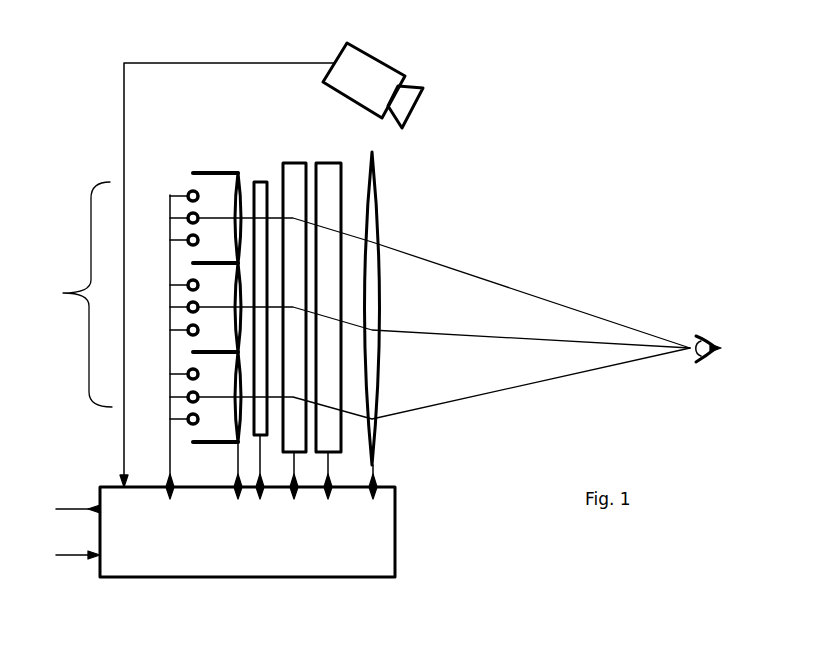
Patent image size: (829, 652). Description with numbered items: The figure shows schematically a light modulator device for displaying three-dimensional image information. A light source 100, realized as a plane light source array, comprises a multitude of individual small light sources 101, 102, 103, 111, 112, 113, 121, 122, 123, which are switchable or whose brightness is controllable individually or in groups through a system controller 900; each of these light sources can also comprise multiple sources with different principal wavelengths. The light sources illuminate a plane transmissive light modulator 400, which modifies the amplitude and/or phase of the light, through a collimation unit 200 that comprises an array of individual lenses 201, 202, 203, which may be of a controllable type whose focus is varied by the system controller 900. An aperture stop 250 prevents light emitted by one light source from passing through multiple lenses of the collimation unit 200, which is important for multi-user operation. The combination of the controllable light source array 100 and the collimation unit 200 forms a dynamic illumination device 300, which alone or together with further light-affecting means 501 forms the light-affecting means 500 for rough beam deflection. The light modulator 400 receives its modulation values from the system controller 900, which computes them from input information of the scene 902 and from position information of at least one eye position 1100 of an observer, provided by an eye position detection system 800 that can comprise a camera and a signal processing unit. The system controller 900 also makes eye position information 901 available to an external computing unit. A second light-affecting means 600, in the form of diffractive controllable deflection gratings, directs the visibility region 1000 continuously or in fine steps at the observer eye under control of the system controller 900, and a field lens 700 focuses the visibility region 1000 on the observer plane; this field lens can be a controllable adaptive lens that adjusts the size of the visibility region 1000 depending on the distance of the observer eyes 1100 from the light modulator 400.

The light source 100 is at (71, 294).
The individual small light source 101 is at (187, 195).
The individual small light source 102 is at (187, 217).
The individual small light source 103 is at (187, 239).
The individual small light source 111 is at (187, 284).
The individual small light source 112 is at (187, 306).
The individual small light source 113 is at (187, 329).
The individual small light source 121 is at (187, 373).
The individual small light source 122 is at (187, 396).
The individual small light source 123 is at (187, 418).
The collimation unit 200 is at (223, 284).
The individual lens 201 is at (236, 214).
The individual lens 202 is at (236, 304).
The individual lens 203 is at (236, 394).
The aperture stop 250 is at (204, 170).
The dynamic illumination device 300 is at (48, 282).
The light modulator 400 is at (260, 182).
The light-affecting means 500 is at (232, 100).
The further light-affecting means 501 is at (293, 163).
The second light-affecting means 600 is at (326, 172).
The field lens 700 is at (370, 173).
The eye position detection system 800 is at (377, 58).
The system controller 900 is at (370, 552).
The eye position information 901 is at (80, 508).
The input information of the scene 902 is at (80, 553).
The visibility region 1000 is at (683, 342).
The eye position 1100 is at (716, 353).